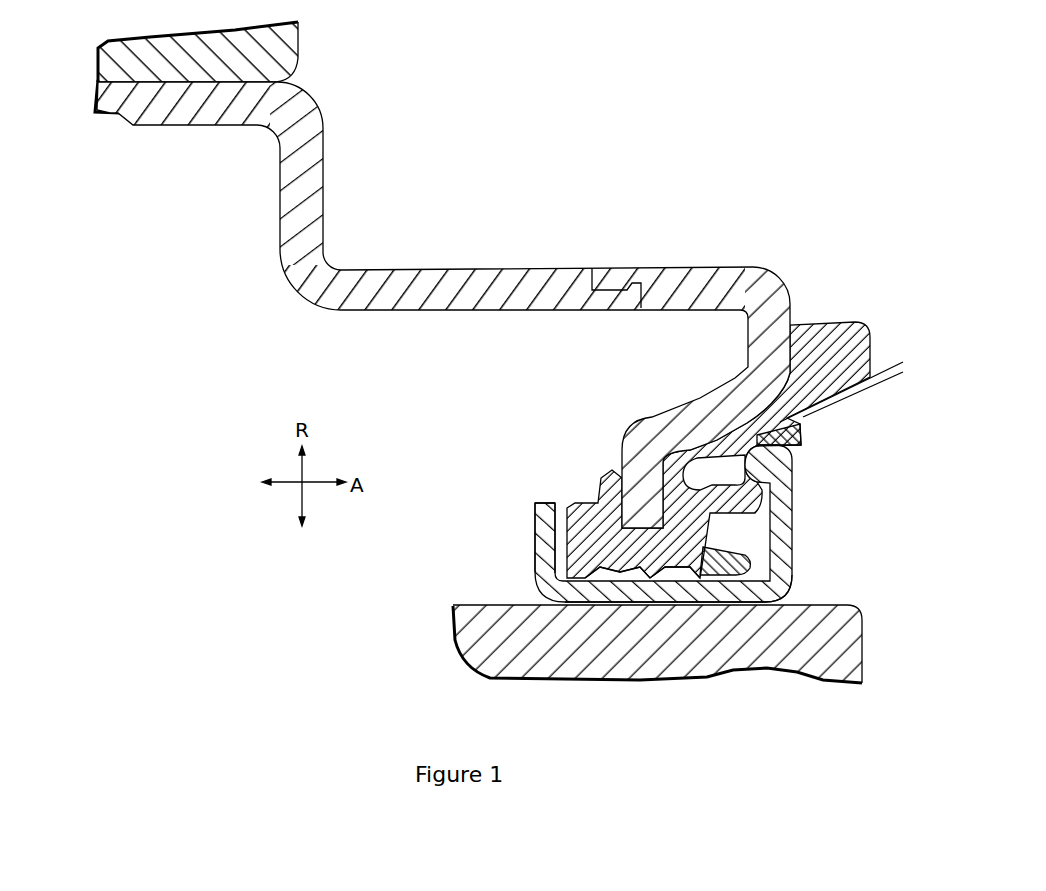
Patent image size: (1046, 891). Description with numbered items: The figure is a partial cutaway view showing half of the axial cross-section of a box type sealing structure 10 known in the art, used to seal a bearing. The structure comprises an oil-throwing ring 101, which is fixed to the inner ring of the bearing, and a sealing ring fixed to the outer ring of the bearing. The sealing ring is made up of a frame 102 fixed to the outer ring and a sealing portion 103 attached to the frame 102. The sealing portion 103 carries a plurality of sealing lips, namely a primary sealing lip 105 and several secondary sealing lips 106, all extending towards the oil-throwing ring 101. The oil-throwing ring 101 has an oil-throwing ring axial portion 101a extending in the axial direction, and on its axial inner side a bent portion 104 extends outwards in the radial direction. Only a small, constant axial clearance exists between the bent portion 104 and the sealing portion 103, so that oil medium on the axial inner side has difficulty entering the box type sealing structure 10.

The box type sealing structure 10 is at (46, 63).
The oil-throwing ring 101 is at (792, 540).
The oil-throwing ring axial portion 101a is at (608, 597).
The frame 102 is at (280, 250).
The sealing portion 103 is at (583, 500).
The bent portion 104 is at (537, 515).
The primary sealing lip 105 is at (767, 573).
The secondary sealing lip 106 is at (773, 490).